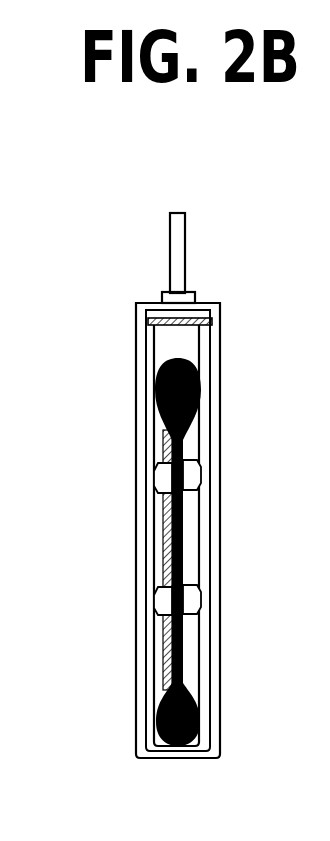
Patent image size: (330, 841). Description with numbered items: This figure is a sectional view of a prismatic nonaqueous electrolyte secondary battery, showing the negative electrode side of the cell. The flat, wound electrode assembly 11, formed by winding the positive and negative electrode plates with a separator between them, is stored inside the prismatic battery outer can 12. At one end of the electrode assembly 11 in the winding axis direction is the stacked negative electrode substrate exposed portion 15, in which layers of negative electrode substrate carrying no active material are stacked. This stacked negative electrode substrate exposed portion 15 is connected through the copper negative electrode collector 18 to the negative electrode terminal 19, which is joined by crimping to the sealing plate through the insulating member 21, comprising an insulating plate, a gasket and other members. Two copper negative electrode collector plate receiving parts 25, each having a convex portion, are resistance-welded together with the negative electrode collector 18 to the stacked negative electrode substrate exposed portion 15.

The flat, wound electrode assembly 11 is at (193, 530).
The prismatic battery outer can 12 is at (208, 664).
The stacked negative electrode substrate exposed portion 15 is at (172, 663).
The negative electrode collector 18 is at (165, 535).
The negative electrode terminal 19 is at (169, 239).
The insulating member 21 is at (147, 301).
The negative electrode collector plate receiving part 25 is at (208, 470).